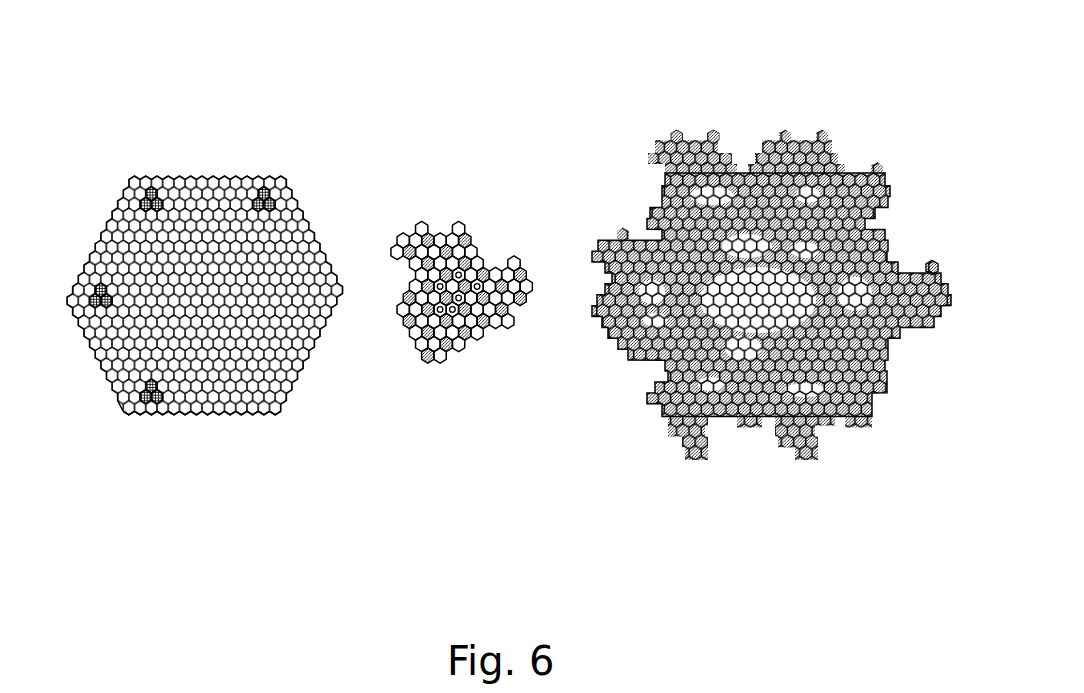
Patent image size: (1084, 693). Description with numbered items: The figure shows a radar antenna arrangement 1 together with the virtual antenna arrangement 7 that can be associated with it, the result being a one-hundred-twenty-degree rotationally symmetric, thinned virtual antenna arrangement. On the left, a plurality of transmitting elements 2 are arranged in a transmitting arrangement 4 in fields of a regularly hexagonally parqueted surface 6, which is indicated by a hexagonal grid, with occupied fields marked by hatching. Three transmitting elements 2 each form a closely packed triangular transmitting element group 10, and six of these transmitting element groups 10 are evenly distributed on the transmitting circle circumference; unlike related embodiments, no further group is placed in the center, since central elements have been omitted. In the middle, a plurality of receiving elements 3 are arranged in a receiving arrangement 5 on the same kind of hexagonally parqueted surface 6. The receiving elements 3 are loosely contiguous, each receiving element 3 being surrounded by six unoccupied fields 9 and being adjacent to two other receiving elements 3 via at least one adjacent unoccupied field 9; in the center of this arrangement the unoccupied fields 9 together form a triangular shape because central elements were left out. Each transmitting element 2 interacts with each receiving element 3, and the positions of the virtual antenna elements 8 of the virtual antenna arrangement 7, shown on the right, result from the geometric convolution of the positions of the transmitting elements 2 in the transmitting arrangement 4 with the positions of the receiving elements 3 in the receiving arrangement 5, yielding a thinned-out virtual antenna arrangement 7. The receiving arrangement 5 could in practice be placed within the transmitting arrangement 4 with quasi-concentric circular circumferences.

The radar antenna arrangement 1 is at (292, 282).
The transmitting element 2 is at (262, 194).
The receiving element 3 is at (462, 362).
The transmitting arrangement 4 is at (323, 199).
The receiving arrangement 5 is at (466, 181).
The regularly hexagonally parqueted surface 6 is at (208, 416).
The virtual antenna arrangement 7 is at (766, 109).
The virtual antenna element 8 is at (934, 260).
The unoccupied field 9 is at (460, 298).
The transmitting element group 10 is at (92, 316).